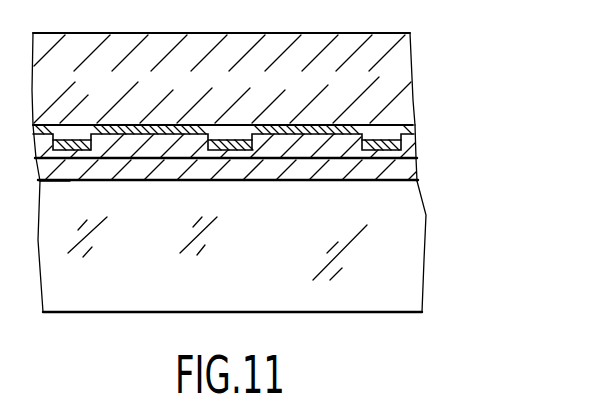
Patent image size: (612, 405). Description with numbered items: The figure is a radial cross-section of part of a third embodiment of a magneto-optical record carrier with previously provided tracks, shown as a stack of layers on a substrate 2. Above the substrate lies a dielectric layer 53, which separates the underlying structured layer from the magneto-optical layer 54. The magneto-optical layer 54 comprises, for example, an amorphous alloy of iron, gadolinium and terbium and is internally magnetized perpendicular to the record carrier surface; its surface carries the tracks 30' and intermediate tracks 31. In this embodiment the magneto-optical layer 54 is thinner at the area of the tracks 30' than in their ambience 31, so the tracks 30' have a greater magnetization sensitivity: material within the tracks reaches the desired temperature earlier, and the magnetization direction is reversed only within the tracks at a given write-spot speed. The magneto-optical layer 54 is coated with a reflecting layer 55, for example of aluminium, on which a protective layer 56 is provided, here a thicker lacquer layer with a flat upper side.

The protective layer 56 is at (47, 66).
The reflecting layer 55 is at (34, 127).
The magneto-optical layer 54 is at (52, 147).
The dielectric layer 53 is at (43, 166).
The tracks 30' is at (36, 210).
The intermediate tracks 31 is at (123, 147).
The substrate 2 is at (72, 287).